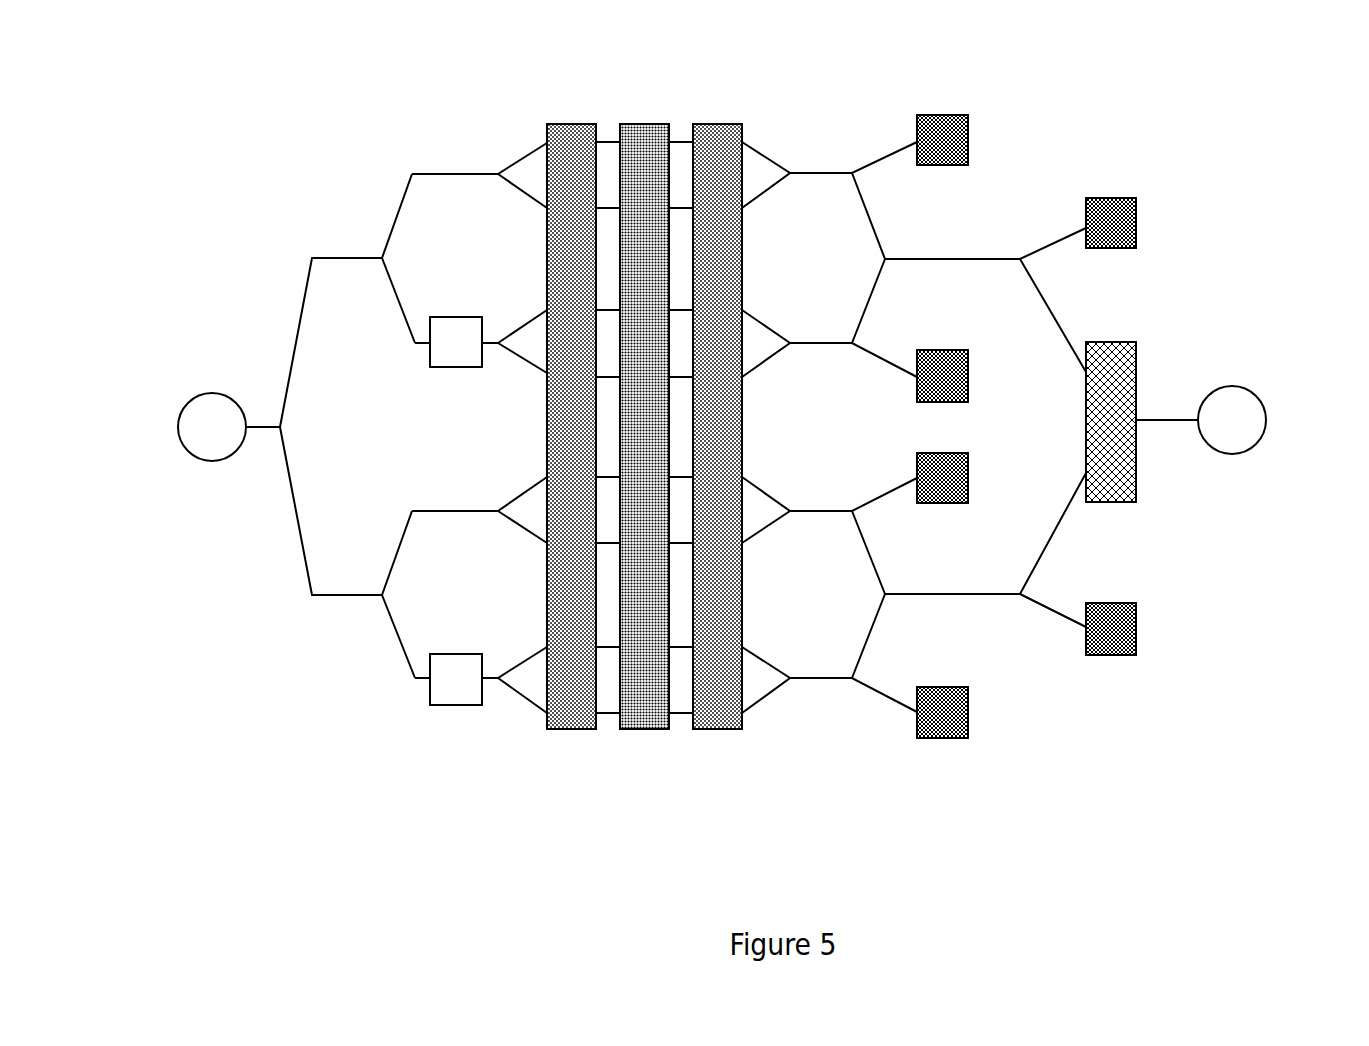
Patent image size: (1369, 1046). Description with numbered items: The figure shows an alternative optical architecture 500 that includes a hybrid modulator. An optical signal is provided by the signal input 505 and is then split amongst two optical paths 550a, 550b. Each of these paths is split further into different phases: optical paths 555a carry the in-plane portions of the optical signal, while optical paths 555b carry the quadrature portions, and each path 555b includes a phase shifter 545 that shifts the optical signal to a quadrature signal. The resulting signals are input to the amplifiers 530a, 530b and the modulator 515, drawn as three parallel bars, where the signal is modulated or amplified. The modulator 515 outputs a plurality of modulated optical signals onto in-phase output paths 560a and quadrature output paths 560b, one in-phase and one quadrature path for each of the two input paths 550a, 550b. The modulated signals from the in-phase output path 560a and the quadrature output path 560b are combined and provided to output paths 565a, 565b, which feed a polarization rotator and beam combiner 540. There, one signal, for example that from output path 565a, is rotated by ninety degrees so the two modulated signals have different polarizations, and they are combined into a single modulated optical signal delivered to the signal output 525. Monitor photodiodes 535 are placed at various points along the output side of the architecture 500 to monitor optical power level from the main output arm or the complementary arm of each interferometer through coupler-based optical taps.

The optical architecture 500 is at (278, 105).
The signal input 505 is at (212, 427).
The modulator 515 is at (632, 703).
The signal output 525 is at (1240, 433).
The amplifier 530a is at (560, 703).
The amplifier 530b is at (708, 703).
The monitor photodiode 535 is at (945, 142).
The polarization rotator and beam combiner 540 is at (1110, 453).
The phase shifter 545 is at (456, 511).
The optical path 550a is at (327, 228).
The optical path 550b is at (332, 607).
The optical path 555a is at (453, 158).
The optical path 555b is at (462, 298).
The in-phase output path 560a is at (820, 162).
The quadrature output path 560b is at (805, 325).
The output path 565a is at (942, 243).
The output path 565b is at (937, 580).